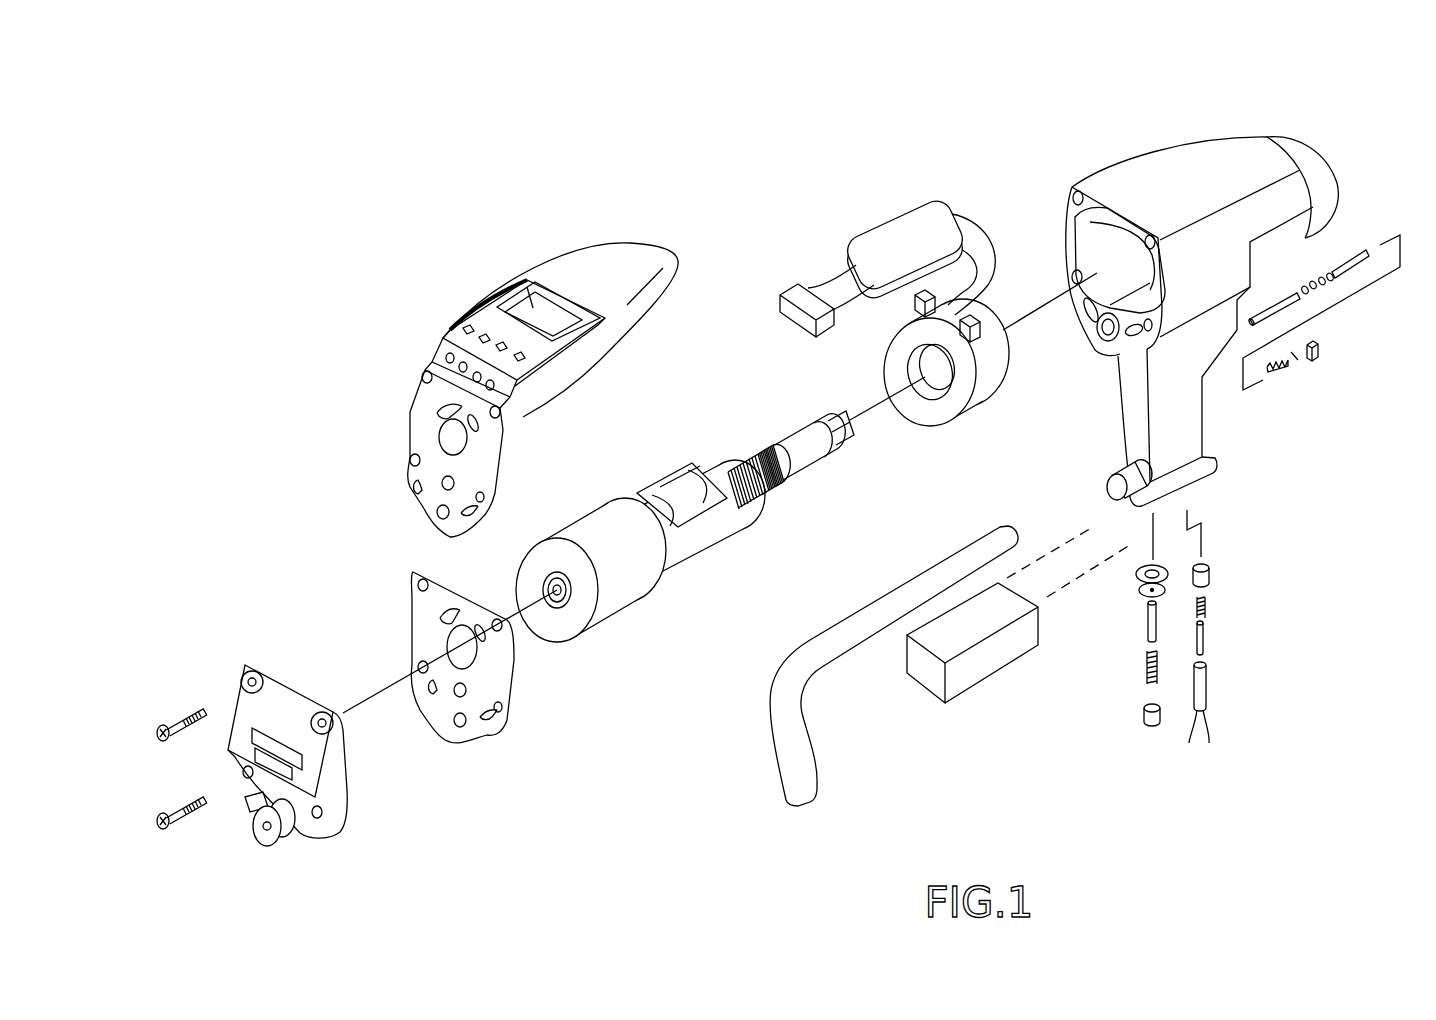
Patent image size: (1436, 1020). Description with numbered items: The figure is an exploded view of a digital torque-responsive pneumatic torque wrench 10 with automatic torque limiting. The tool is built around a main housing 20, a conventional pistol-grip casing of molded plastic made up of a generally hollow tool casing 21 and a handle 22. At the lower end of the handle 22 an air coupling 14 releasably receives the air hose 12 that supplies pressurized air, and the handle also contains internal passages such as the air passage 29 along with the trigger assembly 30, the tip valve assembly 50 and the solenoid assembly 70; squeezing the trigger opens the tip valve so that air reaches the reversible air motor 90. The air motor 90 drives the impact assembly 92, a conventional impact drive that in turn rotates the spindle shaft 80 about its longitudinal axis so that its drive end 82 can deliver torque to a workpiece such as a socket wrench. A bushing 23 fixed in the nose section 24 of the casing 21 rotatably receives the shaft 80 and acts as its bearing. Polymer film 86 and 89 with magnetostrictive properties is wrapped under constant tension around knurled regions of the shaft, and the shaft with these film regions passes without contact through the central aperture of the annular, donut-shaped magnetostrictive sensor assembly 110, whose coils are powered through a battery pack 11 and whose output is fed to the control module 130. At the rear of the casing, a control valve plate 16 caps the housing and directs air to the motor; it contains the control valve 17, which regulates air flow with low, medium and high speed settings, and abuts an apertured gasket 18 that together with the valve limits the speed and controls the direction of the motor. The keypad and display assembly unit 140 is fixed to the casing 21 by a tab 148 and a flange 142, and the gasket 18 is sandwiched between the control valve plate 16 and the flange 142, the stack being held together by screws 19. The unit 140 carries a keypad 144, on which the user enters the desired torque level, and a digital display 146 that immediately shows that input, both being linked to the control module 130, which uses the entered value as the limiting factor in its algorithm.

The pneumatic torque wrench 10 is at (808, 160).
The battery pack 11 is at (973, 690).
The air hose 12 is at (776, 668).
The air coupling 14 is at (1117, 466).
The control valve plate 16 is at (257, 663).
The control valve 17 is at (290, 845).
The gasket 18 is at (504, 738).
The screws 19 is at (164, 722).
The main housing 20 is at (1211, 278).
The tool casing 21 is at (1105, 169).
The handle 22 is at (1207, 418).
The bushing 23 is at (1320, 142).
The nose section 24 is at (1205, 140).
The air passage 29 is at (1102, 335).
The trigger assembly 30 is at (1425, 297).
The tip valve assembly 50 is at (1130, 565).
The solenoid assembly 70 is at (1223, 565).
The spindle shaft 80 is at (825, 453).
The drive end 82 is at (831, 464).
The polymer film 86 is at (740, 466).
The polymer film 89 is at (760, 450).
The reversible air motor 90 is at (609, 625).
The impact assembly 92 is at (682, 518).
The magnetostrictive sensor assembly 110 is at (977, 407).
The control module 130 is at (882, 220).
The keypad and display assembly unit 140 is at (532, 373).
The flange 142 is at (410, 417).
The keypad 144 is at (468, 318).
The digital display 146 is at (522, 287).
The tab 148 is at (675, 255).